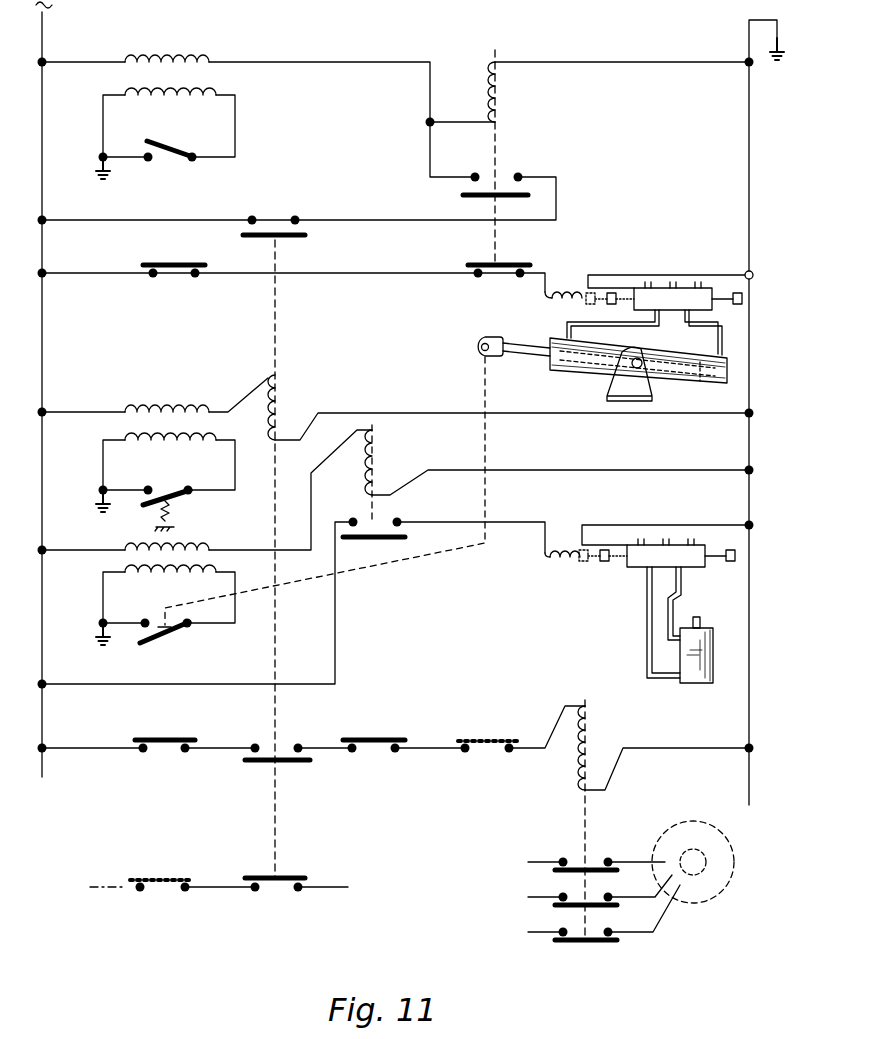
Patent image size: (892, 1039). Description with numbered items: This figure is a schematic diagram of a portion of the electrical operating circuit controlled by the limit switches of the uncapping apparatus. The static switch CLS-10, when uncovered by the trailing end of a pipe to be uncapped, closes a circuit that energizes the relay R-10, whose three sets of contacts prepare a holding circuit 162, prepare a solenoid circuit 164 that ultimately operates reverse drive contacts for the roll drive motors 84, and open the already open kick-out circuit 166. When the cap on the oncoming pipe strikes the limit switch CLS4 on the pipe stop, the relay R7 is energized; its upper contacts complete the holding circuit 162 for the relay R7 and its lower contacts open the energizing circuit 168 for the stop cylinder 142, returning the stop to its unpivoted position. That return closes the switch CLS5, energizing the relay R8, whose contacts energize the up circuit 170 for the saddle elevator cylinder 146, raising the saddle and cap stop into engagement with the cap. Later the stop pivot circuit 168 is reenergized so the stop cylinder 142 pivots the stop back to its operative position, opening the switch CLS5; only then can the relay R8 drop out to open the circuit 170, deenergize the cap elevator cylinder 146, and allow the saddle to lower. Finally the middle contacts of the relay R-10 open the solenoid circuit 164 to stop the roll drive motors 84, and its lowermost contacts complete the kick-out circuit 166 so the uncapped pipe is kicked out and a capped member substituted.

The limit switch CLS4 is at (172, 161).
The relay R7 is at (501, 97).
The holding circuit 162 is at (398, 198).
The energizing circuit 168 is at (543, 273).
The stop cylinder 142 is at (575, 372).
The relay R-10 is at (285, 385).
The static switch CLS-10 is at (186, 494).
The relay R8 is at (383, 447).
The switch CLS5 is at (180, 630).
The up circuit 170 is at (433, 522).
The saddle elevator cylinder 146 is at (714, 683).
The solenoid circuit 164 is at (325, 748).
The kick-out circuit 166 is at (347, 887).
The roll drive motors 84 is at (718, 893).